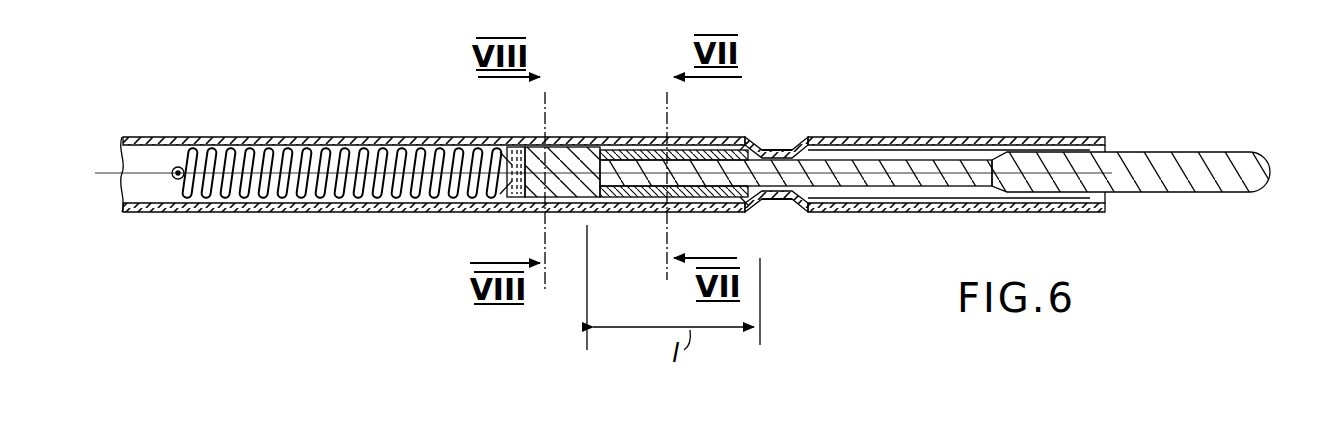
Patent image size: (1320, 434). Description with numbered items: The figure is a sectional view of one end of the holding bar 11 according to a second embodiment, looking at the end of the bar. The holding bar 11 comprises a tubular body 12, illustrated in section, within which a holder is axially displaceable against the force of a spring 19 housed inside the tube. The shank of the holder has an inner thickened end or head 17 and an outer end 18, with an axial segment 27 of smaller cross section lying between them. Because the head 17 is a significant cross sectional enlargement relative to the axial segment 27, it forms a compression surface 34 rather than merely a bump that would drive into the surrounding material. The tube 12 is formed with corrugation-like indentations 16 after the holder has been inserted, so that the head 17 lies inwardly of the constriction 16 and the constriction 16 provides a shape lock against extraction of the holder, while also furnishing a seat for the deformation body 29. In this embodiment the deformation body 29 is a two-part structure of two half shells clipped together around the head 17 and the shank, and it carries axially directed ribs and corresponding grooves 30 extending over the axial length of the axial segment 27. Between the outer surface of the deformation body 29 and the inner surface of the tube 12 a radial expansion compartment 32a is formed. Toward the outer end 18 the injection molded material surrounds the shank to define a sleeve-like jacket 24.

The holding bar 11 is at (334, 228).
The tubular body 12 is at (292, 138).
The corrugation-like indentations 16 is at (790, 140).
The inner thickened end 17 is at (522, 146).
The outer end 18 is at (1064, 158).
The spring 19 is at (257, 145).
The sleeve-like jacket 24 is at (1027, 137).
The axial segment 27 is at (742, 141).
The deformation body 29 is at (750, 200).
The grooves 30 is at (630, 159).
The radial expansion compartment 32a is at (688, 149).
The compression surface 34 is at (604, 146).